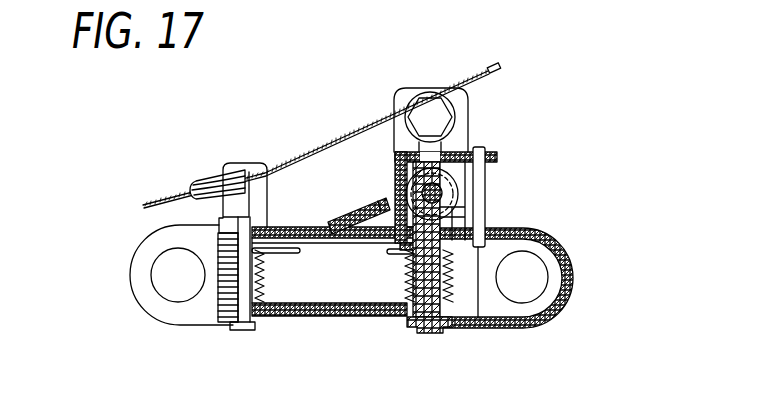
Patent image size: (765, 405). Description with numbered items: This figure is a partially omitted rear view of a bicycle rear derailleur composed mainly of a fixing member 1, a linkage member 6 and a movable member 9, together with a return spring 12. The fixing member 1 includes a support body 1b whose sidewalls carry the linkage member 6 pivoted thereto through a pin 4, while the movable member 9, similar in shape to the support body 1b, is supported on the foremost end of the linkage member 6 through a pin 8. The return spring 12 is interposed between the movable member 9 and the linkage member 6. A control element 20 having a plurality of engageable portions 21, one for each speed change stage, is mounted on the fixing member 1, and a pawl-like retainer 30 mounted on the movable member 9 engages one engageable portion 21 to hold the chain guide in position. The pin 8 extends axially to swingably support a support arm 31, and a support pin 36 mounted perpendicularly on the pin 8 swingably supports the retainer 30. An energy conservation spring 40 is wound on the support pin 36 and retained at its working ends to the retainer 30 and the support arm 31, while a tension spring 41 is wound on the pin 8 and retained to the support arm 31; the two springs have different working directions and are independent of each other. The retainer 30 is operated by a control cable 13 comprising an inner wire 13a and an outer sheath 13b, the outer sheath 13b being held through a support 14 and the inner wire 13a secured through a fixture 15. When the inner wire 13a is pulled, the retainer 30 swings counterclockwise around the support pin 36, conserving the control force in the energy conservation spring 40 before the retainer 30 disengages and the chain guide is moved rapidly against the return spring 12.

The fixing member 1 is at (138, 243).
The support body 1b is at (138, 280).
The pin 4 is at (243, 287).
The linkage member 6 is at (313, 318).
The pin 8 is at (402, 315).
The movable member 9 is at (572, 270).
The return spring 12 is at (264, 271).
The control cable 13 is at (320, 135).
The inner wire 13a is at (163, 196).
The outer sheath 13b is at (208, 182).
The support 14 is at (263, 163).
The fixture 15 is at (441, 120).
The control element 20 is at (336, 221).
The engageable portion 21 is at (386, 199).
The retainer 30 is at (397, 134).
The support arm 31 is at (395, 173).
The support pin 36 is at (447, 190).
The energy conservation spring 40 is at (453, 198).
The tension spring 41 is at (407, 272).